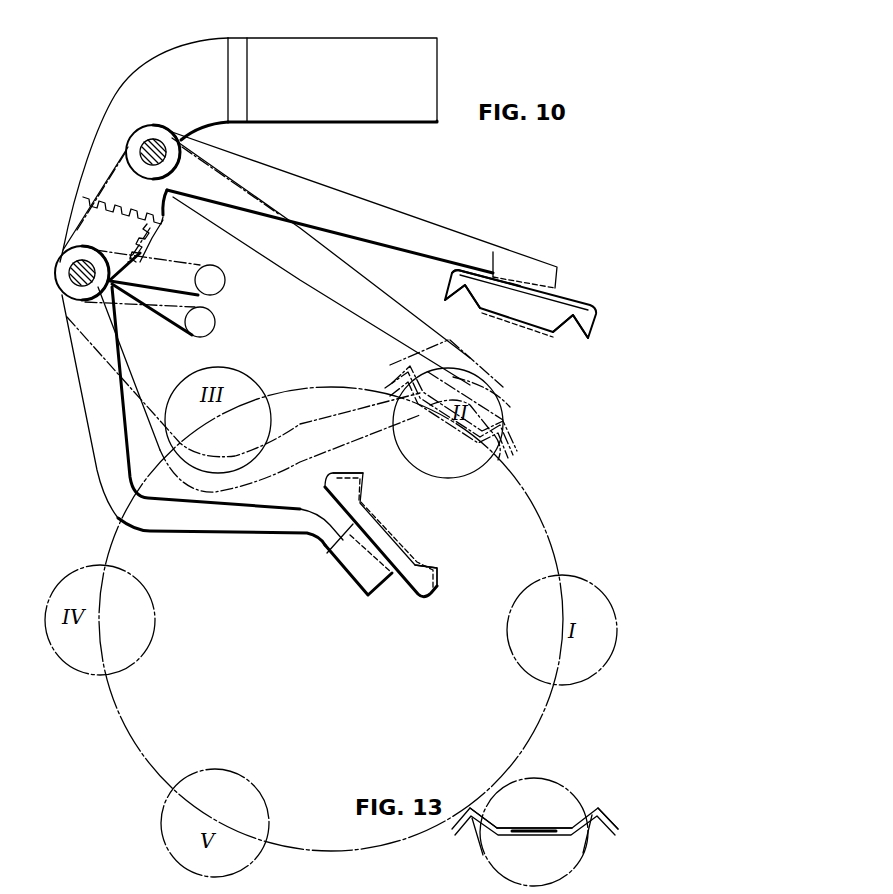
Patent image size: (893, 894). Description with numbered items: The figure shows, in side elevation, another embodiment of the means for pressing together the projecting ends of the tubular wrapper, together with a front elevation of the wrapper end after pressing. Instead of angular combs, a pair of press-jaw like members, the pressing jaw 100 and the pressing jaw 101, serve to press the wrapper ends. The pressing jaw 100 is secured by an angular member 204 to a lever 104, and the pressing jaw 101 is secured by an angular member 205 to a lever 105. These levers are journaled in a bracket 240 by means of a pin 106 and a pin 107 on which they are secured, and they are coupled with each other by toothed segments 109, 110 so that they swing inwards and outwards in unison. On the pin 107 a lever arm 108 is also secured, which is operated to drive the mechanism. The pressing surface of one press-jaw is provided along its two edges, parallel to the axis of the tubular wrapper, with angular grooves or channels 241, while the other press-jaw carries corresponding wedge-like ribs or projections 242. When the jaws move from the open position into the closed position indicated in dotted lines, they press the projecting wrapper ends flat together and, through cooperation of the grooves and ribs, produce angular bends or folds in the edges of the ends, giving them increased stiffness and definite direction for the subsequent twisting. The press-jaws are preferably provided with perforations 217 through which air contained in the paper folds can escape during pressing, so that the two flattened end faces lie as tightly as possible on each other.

The bracket 240 is at (165, 45).
The pin 106 is at (141, 149).
The pin 107 is at (75, 285).
The toothed segment 110 is at (96, 231).
The toothed segment 109 is at (167, 227).
The lever arm 108 is at (170, 323).
The lever 104 is at (370, 210).
The pressing jaw 100 is at (572, 305).
The angular member 204 is at (552, 293).
The angular grooves or channels 241 is at (465, 294).
The perforations 217 is at (528, 323).
The lever 105 is at (225, 533).
The angular member 205 is at (390, 577).
The pressing jaw 101 is at (385, 545).
The wedge-like ribs or projections 242 is at (368, 485).